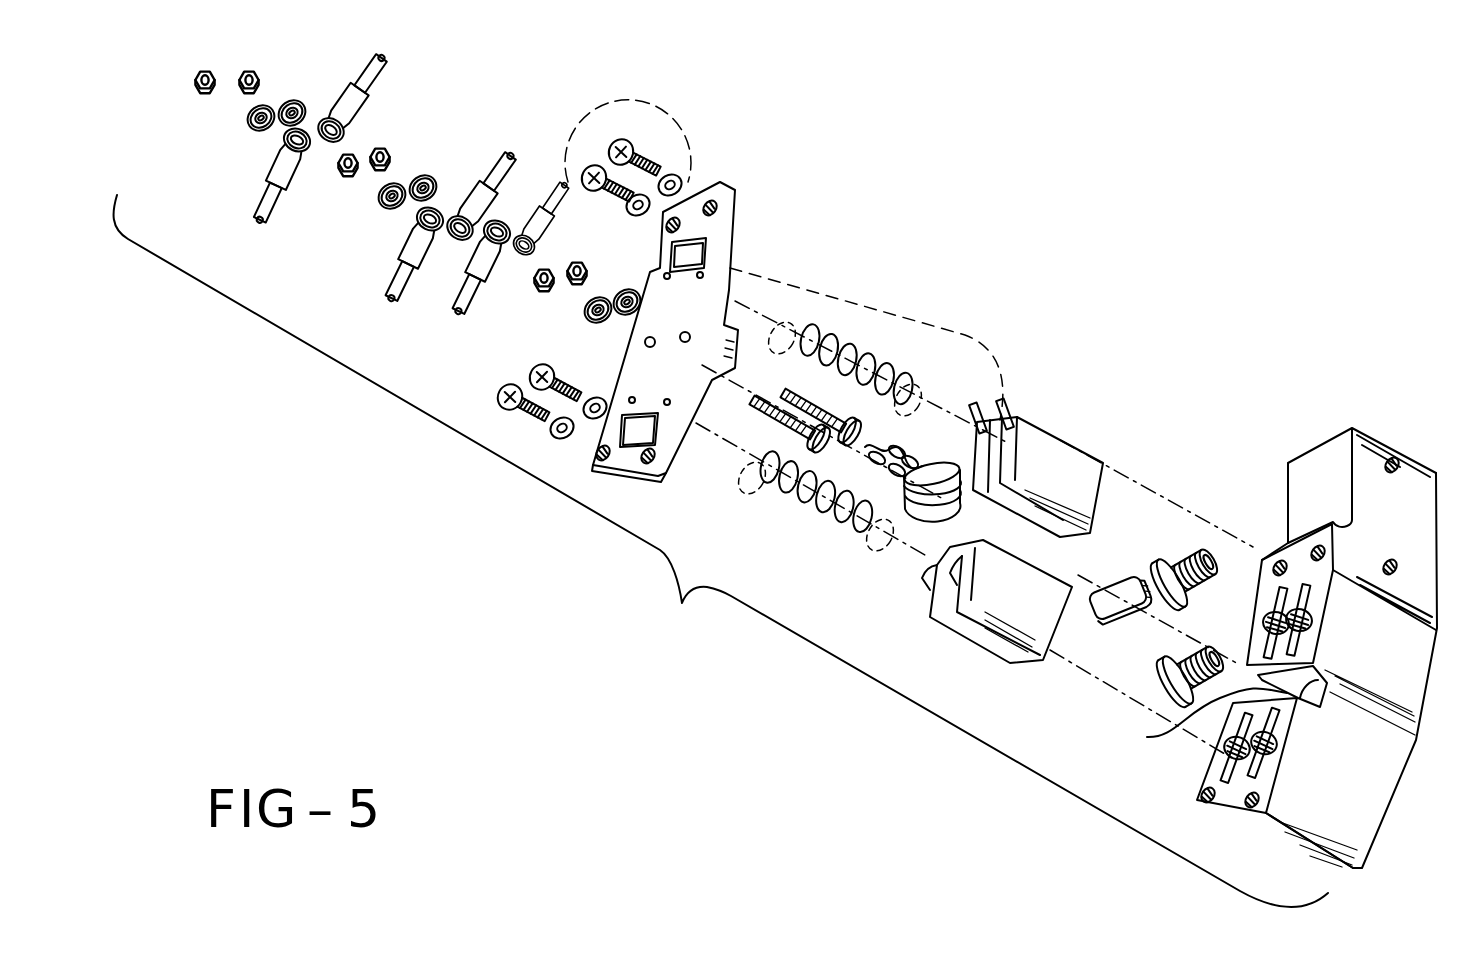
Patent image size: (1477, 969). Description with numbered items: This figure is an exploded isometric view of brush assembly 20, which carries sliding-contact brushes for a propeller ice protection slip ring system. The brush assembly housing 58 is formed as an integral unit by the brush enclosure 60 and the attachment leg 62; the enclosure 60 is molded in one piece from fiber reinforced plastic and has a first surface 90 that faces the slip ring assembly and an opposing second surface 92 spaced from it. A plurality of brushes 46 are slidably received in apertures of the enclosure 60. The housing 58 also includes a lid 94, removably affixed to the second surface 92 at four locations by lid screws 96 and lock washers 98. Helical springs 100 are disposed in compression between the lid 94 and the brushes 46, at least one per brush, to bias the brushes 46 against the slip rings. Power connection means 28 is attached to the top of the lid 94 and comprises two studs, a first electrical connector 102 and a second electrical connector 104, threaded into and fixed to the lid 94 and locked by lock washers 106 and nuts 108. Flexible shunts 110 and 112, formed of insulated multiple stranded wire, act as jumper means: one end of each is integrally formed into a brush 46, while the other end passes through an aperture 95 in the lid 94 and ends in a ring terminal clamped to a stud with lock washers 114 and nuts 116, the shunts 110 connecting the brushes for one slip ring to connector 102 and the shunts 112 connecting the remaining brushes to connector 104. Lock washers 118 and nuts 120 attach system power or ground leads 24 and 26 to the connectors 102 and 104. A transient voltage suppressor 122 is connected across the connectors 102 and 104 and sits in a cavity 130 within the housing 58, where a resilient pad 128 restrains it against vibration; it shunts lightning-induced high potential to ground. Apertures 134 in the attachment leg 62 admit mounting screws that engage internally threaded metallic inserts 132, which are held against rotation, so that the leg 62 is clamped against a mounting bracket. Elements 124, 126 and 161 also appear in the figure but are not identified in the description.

The brush assembly 20 is at (721, 551).
The system power or ground lead 24 is at (258, 199).
The system power or ground lead 26 is at (367, 78).
The power connection means 28 is at (322, 300).
The brushes 46 is at (984, 632).
The brush assembly housing 58 is at (1282, 626).
The brush enclosure 60 is at (1278, 836).
The attachment leg 62 is at (1320, 455).
The first surface 90 is at (1273, 703).
The second surface 92 is at (1200, 795).
The lid 94 is at (735, 205).
The aperture 95 is at (640, 431).
The lid screws 96 is at (621, 140).
The lock washers 98 is at (648, 197).
The helical springs 100 is at (838, 338).
The first electrical connector 102 is at (752, 398).
The second electrical connector 104 is at (780, 395).
The lock washers 106 is at (627, 310).
The nuts 108 is at (577, 282).
The flexible shunts 110 is at (452, 222).
The flexible shunts 112 is at (524, 234).
The lock washers 114 is at (422, 190).
The nuts 116 is at (380, 148).
The lock washers 118 is at (290, 117).
The nuts 120 is at (250, 87).
The transient voltage suppressor 122 is at (921, 507).
The wire spring 124 is at (897, 458).
The relay block 126 is at (895, 452).
The resilient pad 128 is at (1118, 580).
The cavity 130 is at (1187, 721).
The metallic inserts 132 is at (1168, 583).
The apertures 134 is at (1393, 463).
The slotted screws 161 is at (1265, 741).